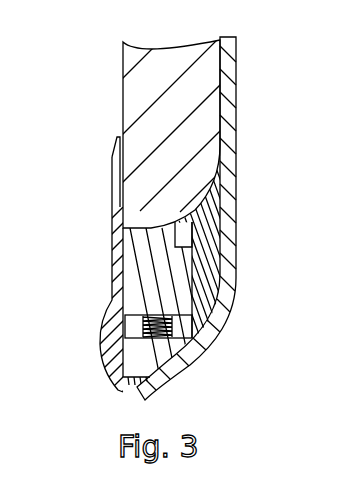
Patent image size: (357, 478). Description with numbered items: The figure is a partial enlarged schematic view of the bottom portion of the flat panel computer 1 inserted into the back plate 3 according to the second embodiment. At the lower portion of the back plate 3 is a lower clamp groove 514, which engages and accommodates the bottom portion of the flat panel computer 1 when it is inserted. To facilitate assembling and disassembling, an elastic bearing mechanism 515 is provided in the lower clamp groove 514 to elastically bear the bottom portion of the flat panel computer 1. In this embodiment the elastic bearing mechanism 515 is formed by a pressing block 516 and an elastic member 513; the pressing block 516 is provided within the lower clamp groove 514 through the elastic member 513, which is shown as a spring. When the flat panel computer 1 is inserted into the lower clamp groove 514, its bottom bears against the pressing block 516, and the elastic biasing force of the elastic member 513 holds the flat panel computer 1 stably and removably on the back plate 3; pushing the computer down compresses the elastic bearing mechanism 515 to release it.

The flat panel computer 1 is at (213, 68).
The back plate 3 is at (236, 118).
The lower clamp groove 514 is at (120, 173).
The elastic bearing mechanism 515 is at (113, 268).
The pressing block 516 is at (183, 262).
The elastic member 513 is at (172, 328).